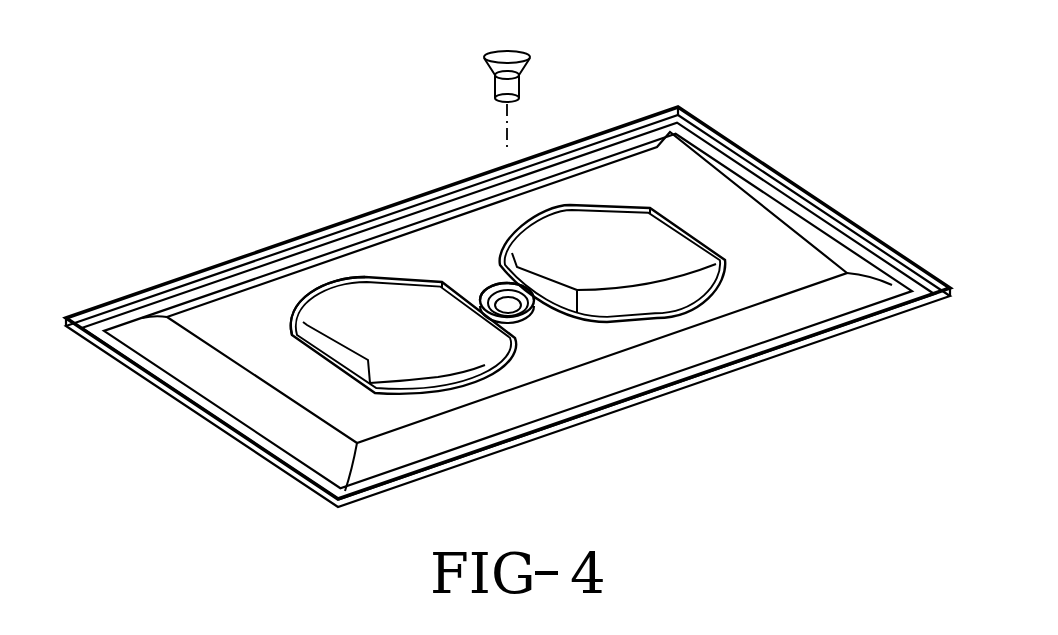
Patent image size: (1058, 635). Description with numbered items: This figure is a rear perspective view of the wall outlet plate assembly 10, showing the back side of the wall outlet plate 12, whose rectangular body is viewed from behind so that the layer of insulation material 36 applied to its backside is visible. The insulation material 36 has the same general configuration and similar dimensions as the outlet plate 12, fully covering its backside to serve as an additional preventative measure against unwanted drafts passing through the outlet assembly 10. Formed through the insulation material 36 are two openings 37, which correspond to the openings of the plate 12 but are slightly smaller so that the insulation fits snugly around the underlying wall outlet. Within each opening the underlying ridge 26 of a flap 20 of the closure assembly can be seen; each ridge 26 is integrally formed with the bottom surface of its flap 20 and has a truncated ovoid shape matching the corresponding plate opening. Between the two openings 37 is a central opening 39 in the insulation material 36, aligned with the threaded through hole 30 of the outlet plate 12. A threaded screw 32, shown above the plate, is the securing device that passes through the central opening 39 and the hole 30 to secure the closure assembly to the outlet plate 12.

The outlet plate assembly 10 is at (165, 150).
The wall outlet plate 12 is at (728, 137).
The flap 20 is at (622, 265).
The ridge 26 is at (438, 372).
The through hole 30 is at (513, 308).
The threaded screw 32 is at (497, 62).
The insulation material 36 is at (800, 275).
The openings 37 is at (329, 291).
The central opening 39 is at (495, 292).